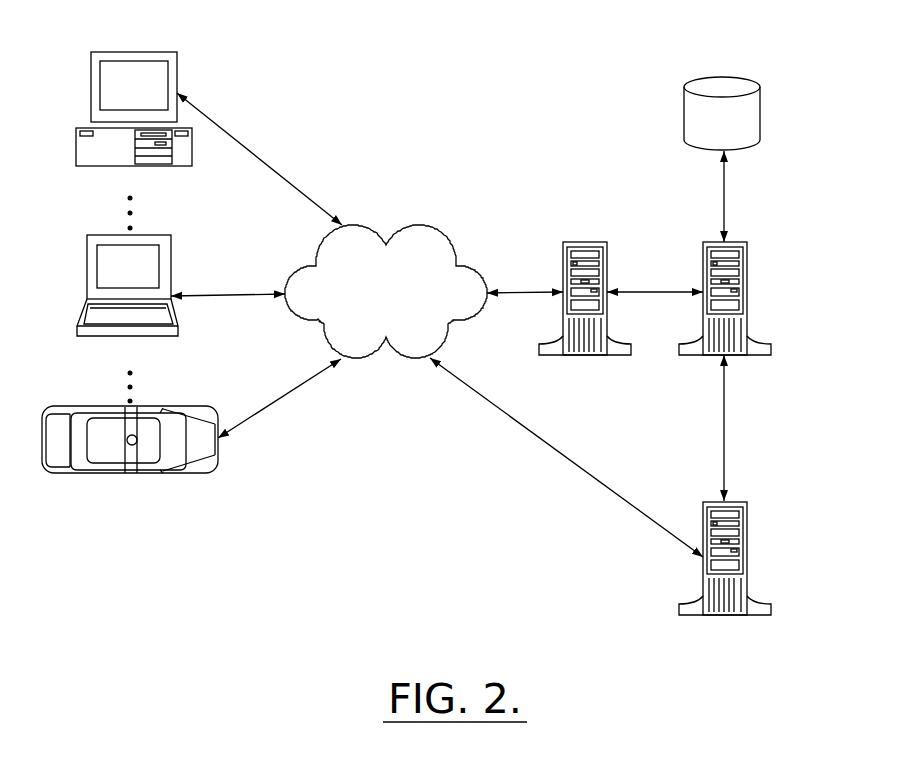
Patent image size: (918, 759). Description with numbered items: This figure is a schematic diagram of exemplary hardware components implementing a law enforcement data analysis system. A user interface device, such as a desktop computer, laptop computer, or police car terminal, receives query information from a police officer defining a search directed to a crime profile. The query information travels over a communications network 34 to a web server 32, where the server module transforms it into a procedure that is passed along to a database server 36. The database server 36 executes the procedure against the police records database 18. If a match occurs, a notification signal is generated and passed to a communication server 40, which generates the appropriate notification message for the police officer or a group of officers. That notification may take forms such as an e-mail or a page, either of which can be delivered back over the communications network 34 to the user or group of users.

The police records database 18 is at (760, 110).
The web server 32 is at (607, 260).
The communications network 34 is at (413, 225).
The database server 36 is at (747, 258).
The communication server 40 is at (745, 540).